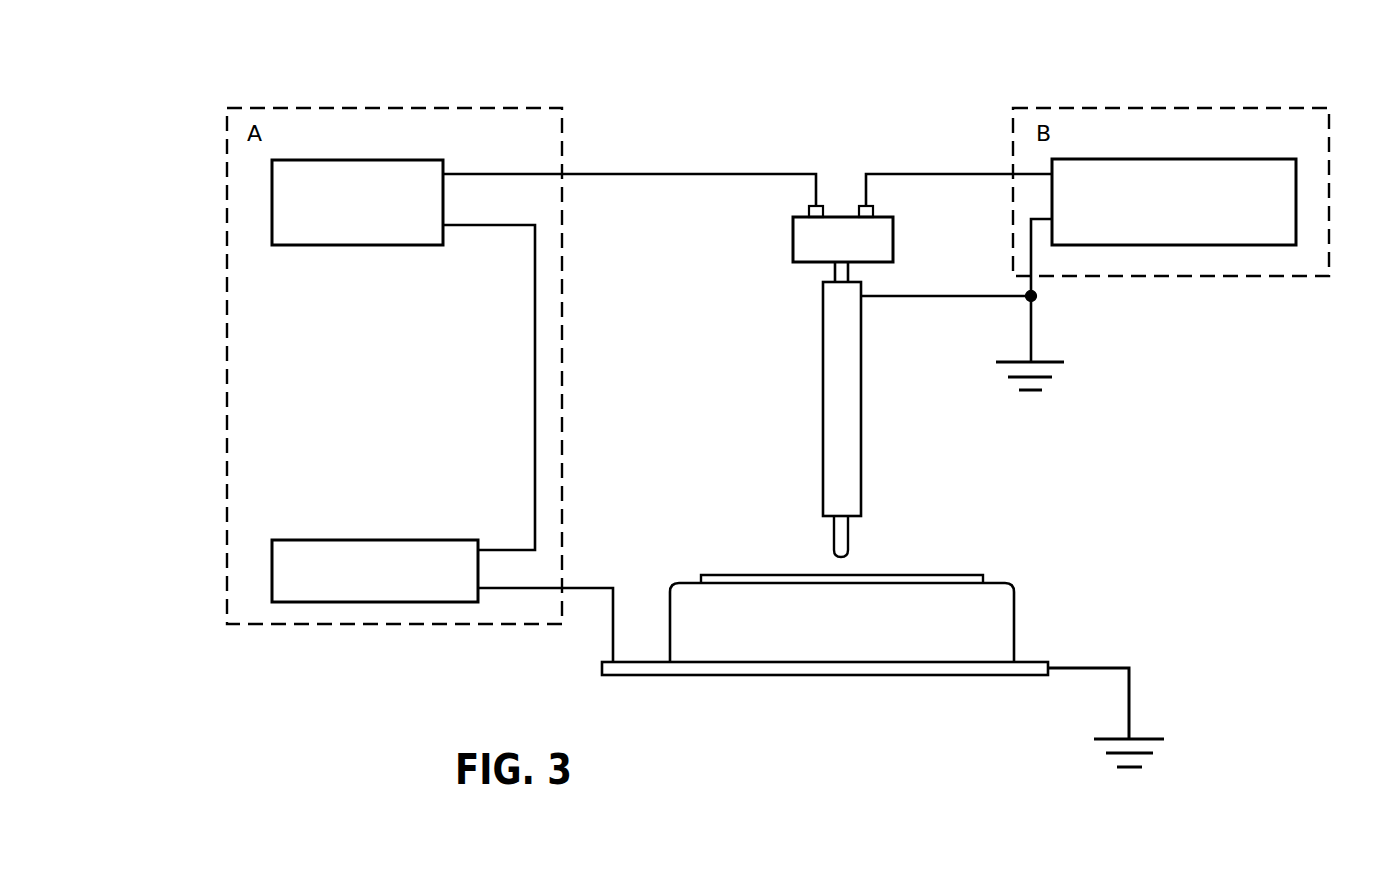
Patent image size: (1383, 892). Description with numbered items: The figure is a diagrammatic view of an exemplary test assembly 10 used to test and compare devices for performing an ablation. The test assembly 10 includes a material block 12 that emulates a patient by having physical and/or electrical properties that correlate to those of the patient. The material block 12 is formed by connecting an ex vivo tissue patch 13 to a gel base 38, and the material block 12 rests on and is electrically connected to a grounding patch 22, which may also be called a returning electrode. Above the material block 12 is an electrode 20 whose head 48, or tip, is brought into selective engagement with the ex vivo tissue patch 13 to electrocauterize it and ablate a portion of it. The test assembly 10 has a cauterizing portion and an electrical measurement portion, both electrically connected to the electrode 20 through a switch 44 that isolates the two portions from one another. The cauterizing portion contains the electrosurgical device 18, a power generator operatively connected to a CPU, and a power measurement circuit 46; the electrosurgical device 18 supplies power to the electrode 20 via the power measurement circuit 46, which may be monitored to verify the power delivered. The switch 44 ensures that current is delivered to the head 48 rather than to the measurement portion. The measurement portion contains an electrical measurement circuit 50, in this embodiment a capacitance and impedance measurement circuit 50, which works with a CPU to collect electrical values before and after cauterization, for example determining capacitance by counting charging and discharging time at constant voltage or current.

The test assembly 10 is at (108, 98).
The power measurement circuit 46 is at (388, 160).
The electrosurgical device 18 is at (412, 540).
The switch 44 is at (893, 238).
The electrode 20 is at (861, 401).
The head 48 is at (850, 538).
The material block 12 is at (879, 584).
The gel base 38 is at (1014, 618).
The ex vivo tissue patch 13 is at (930, 573).
The grounding patch 22 is at (650, 669).
The electrical measurement circuit 50 is at (1296, 190).